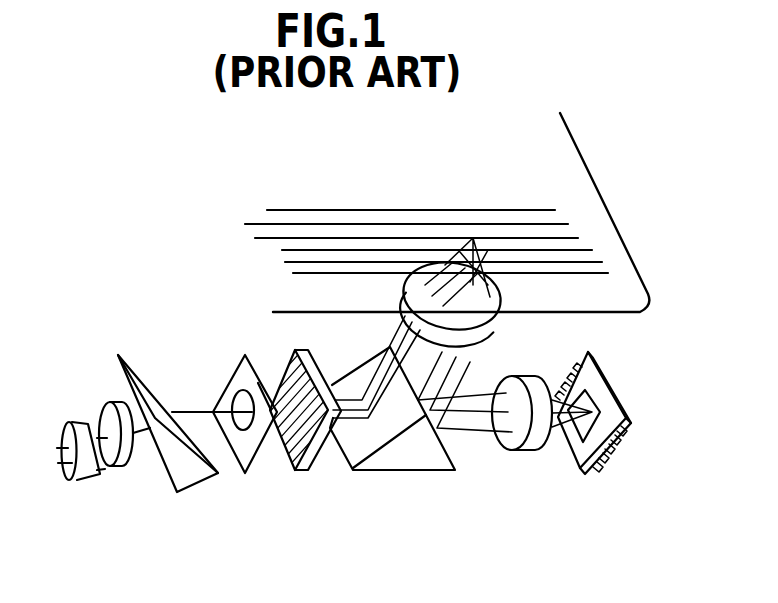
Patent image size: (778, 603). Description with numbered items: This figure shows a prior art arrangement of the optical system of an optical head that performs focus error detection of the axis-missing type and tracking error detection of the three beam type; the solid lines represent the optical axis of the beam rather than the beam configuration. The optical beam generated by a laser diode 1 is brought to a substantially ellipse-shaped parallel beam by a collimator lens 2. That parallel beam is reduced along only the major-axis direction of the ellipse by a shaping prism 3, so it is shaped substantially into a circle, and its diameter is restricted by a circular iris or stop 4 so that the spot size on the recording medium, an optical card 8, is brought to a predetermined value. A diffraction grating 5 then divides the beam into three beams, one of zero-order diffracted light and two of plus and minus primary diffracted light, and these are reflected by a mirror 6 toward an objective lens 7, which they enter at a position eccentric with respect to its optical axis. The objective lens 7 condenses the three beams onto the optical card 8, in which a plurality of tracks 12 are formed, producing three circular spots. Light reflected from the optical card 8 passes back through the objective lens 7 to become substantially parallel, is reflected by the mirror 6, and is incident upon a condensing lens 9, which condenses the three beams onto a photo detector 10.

The laser diode 1 is at (100, 476).
The collimator lens 2 is at (102, 403).
The shaping prism 3 is at (203, 483).
The circular iris or stop 4 is at (232, 387).
The diffraction grating 5 is at (300, 472).
The mirror 6 is at (428, 470).
The objective lens 7 is at (500, 334).
The optical card 8 is at (622, 223).
The condensing lens 9 is at (523, 452).
The photo detector 10 is at (608, 390).
The tracks 12 is at (350, 243).